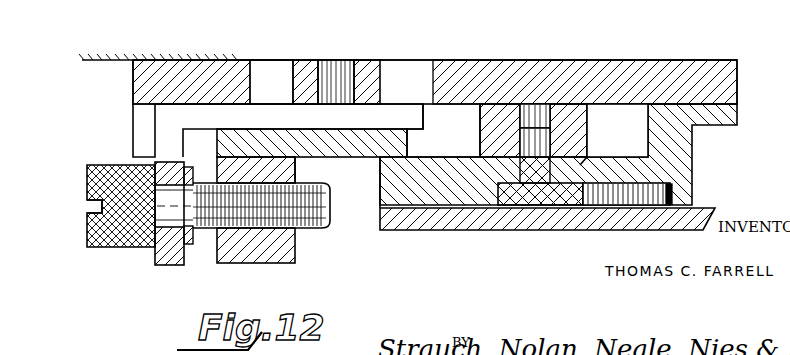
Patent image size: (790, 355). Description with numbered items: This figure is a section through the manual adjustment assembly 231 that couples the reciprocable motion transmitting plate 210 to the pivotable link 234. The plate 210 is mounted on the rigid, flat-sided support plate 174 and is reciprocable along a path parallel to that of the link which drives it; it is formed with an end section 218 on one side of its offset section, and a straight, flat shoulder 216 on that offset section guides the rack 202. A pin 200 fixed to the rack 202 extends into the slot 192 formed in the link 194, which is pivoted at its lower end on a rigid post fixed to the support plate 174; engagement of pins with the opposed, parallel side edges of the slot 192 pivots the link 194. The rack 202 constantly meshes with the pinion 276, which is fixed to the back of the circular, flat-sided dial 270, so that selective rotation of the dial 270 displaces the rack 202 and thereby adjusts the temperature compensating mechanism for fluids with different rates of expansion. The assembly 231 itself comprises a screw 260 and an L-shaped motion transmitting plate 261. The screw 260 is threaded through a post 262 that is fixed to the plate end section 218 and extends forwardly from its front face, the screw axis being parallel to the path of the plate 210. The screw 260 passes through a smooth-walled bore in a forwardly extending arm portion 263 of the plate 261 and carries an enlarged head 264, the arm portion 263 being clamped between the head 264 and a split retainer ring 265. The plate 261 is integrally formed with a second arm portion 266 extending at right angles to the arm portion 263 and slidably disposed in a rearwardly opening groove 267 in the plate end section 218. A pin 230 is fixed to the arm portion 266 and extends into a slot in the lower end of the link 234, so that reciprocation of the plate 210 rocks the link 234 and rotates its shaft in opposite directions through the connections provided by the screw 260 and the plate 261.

The support plate 174 is at (133, 81).
The second arm portion 266 is at (218, 100).
The L-shaped motion transmitting plate 261 is at (266, 100).
The pivotable link 234 is at (366, 66).
The groove 267 is at (393, 128).
The pin 230 is at (335, 96).
The motion transmitting plate 210 is at (428, 155).
The shoulder 216 is at (504, 201).
The link 194 is at (583, 122).
The rack 202 is at (572, 185).
The slot 192 is at (531, 116).
The pin 200 is at (538, 128).
The pinion 276 is at (672, 193).
The dial 270 is at (715, 218).
The end section 218 is at (360, 160).
The post 262 is at (280, 265).
The screw 260 is at (314, 229).
The split retainer ring 265 is at (192, 250).
The arm portion 263 is at (156, 256).
The enlarged head 264 is at (95, 185).
The manual adjustment assembly 231 is at (95, 243).